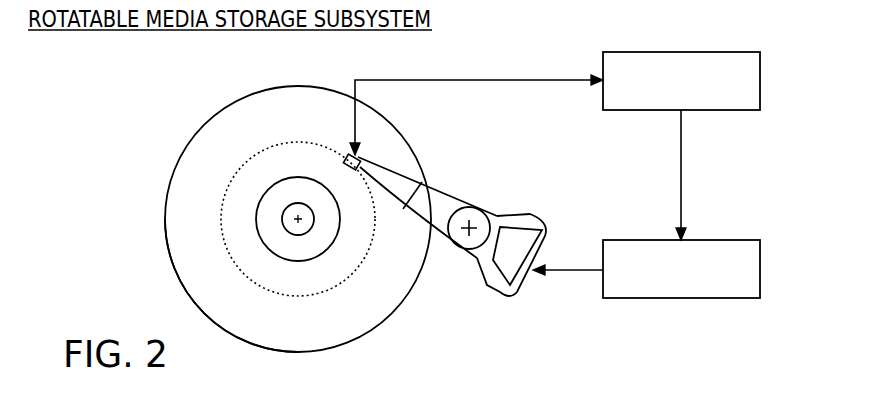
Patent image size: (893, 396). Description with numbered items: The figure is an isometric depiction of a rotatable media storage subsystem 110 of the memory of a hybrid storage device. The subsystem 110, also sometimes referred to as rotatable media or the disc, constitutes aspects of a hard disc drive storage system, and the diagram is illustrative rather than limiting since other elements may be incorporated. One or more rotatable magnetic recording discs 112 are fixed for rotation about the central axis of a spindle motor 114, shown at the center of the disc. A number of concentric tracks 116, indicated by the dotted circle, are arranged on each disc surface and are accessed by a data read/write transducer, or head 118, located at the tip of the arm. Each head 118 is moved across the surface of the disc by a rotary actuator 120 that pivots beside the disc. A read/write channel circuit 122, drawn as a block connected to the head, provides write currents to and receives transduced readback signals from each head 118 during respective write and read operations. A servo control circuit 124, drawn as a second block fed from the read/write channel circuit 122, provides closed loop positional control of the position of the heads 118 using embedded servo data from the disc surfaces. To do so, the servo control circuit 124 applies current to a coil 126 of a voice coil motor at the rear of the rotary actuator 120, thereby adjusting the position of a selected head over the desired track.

The rotatable media storage subsystem 110 is at (193, 80).
The rotatable magnetic recording disc 112 is at (193, 257).
The spindle motor 114 is at (302, 193).
The concentric tracks 116 is at (302, 296).
The data read/write transducer (head) 118 is at (347, 156).
The rotary actuator 120 is at (497, 193).
The read/write channel circuit 122 is at (682, 52).
The servo control circuit 124 is at (713, 240).
The coil 126 is at (547, 222).